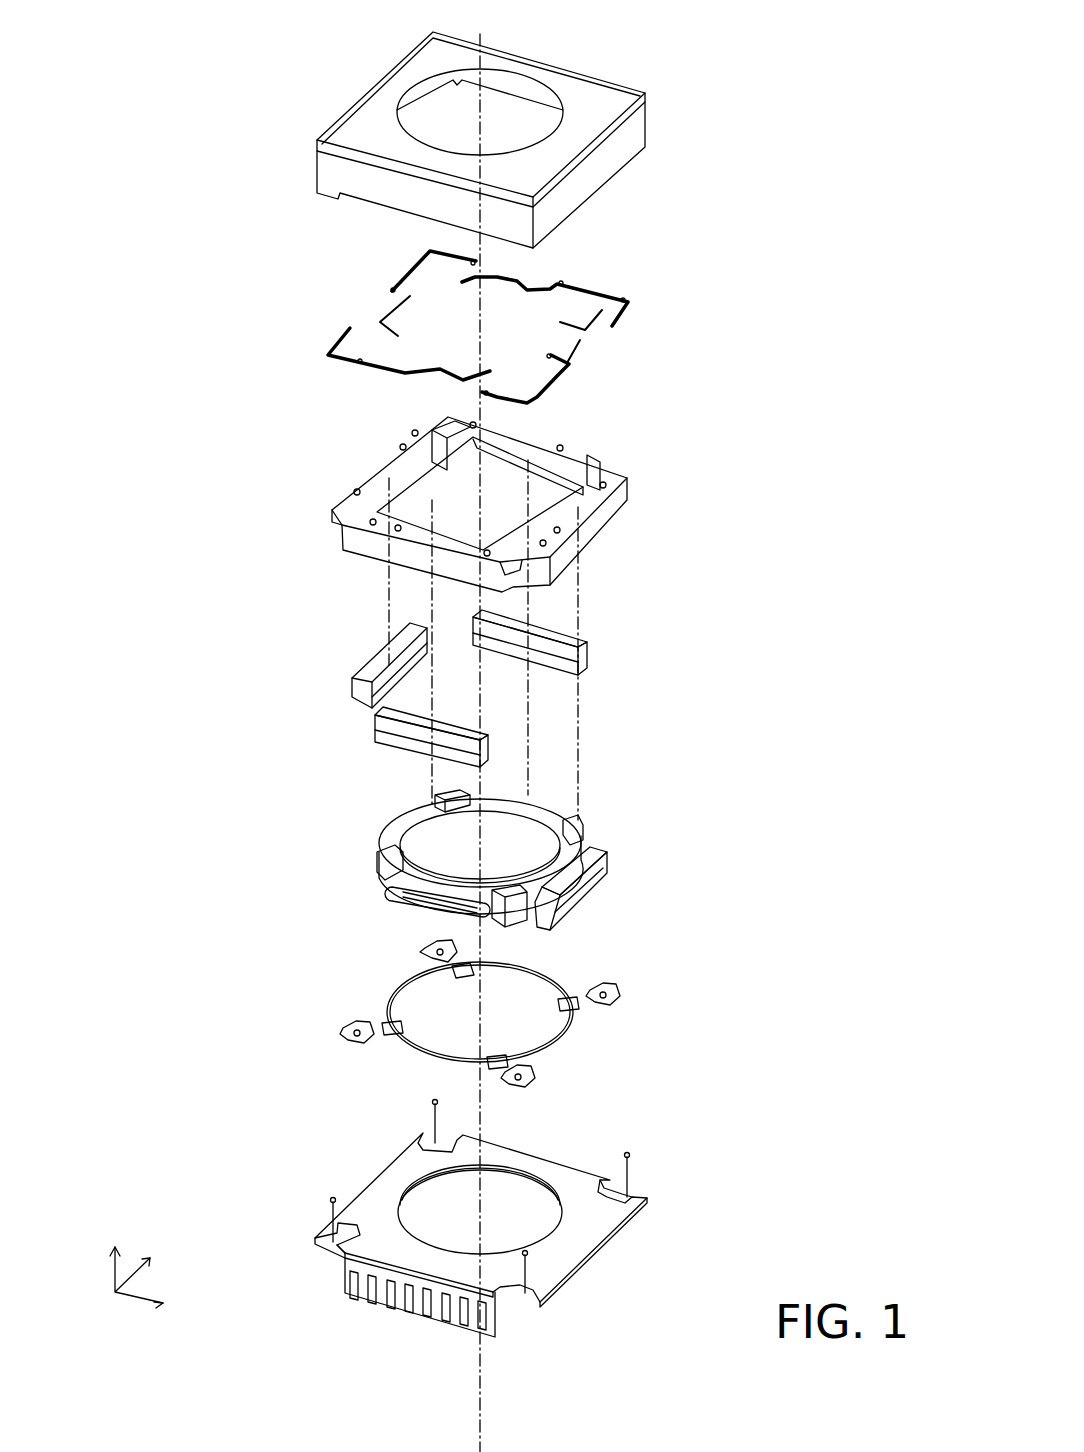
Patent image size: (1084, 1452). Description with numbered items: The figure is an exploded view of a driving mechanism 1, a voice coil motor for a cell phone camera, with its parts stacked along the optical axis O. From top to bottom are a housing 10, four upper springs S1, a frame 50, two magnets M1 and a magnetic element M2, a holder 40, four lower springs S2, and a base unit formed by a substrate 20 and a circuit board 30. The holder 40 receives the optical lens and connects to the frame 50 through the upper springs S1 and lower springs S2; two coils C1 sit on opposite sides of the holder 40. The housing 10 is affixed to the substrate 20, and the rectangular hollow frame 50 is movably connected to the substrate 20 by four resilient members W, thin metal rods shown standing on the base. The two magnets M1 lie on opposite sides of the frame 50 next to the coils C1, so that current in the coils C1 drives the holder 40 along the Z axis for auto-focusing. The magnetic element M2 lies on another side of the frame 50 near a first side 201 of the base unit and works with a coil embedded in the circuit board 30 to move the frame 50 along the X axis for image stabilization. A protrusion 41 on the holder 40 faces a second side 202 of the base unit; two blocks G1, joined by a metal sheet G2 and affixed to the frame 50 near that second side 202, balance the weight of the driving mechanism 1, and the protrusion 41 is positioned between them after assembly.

The driving mechanism 1 is at (230, 78).
The optical axis O is at (495, 726).
The housing 10 is at (630, 133).
The upper spring S1 is at (395, 282).
The frame 50 is at (593, 525).
The magnet M1 is at (588, 658).
The magnetic element M2 is at (362, 693).
The holder 40 is at (510, 829).
The protrusion 41 is at (577, 832).
The coil C1 is at (418, 902).
The block G1 is at (597, 855).
The metal sheet G2 is at (587, 885).
The lower spring S2 is at (417, 950).
The substrate 20 is at (492, 1235).
The first side 201 is at (360, 1193).
The second side 202 is at (620, 1227).
The circuit board 30 is at (410, 1172).
The resilient member W is at (427, 1117).